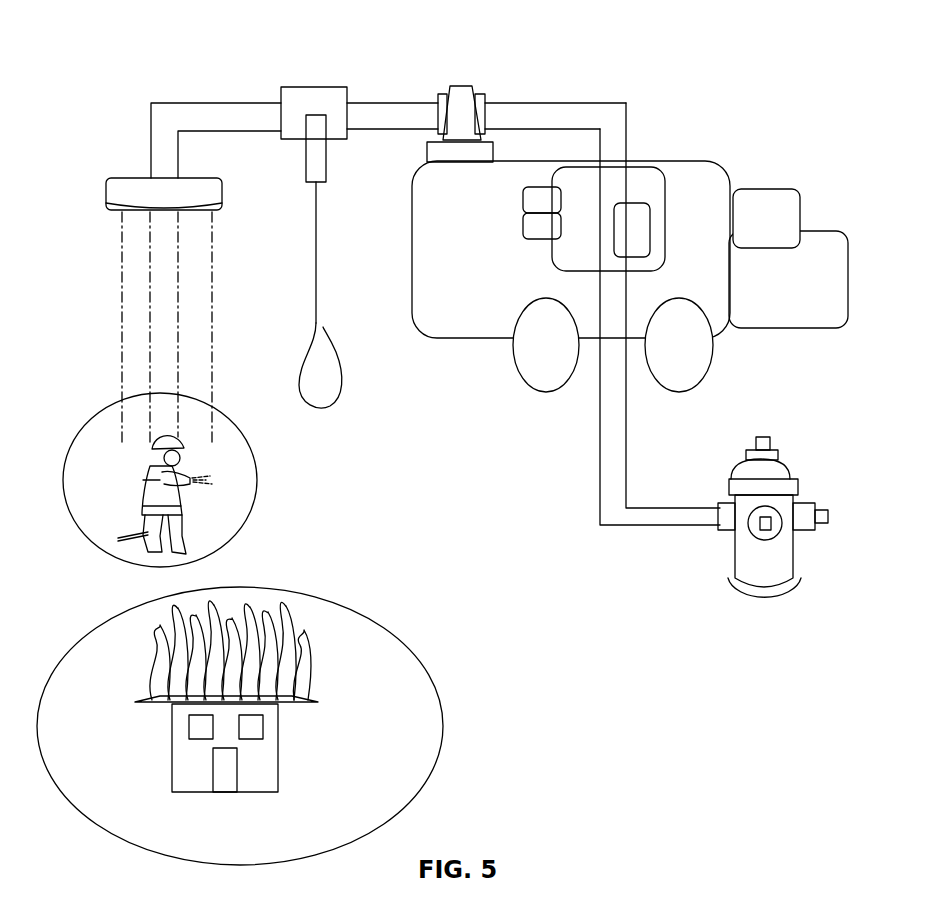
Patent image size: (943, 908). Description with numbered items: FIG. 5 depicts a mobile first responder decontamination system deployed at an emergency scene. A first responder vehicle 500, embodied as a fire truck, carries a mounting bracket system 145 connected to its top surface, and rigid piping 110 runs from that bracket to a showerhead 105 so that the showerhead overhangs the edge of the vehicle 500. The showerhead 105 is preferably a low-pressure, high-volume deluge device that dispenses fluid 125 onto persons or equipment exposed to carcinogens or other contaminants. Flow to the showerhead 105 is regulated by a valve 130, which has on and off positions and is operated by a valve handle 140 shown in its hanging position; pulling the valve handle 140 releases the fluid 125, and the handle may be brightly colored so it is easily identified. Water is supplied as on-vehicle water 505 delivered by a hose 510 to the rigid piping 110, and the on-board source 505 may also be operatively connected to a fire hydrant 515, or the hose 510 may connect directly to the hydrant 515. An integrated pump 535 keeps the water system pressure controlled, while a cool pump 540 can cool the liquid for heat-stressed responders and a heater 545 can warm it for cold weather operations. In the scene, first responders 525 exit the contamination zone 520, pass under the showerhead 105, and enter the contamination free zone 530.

The showerhead 105 is at (108, 180).
The rigid piping 110 is at (397, 102).
The fluid 125 is at (122, 320).
The valve 130 is at (302, 87).
The valve handle 140 is at (325, 412).
The mounting bracket system 145 is at (462, 86).
The first responder vehicle 500 is at (797, 190).
The on-vehicle water 505 is at (638, 195).
The hose 510 is at (627, 112).
The fire hydrant 515 is at (735, 548).
The contamination zone 520 is at (387, 657).
The first responders 525 is at (172, 468).
The contamination free zone 530 is at (234, 538).
The integrated pump 535 is at (650, 235).
The cool pump 540 is at (523, 200).
The heater 545 is at (523, 228).